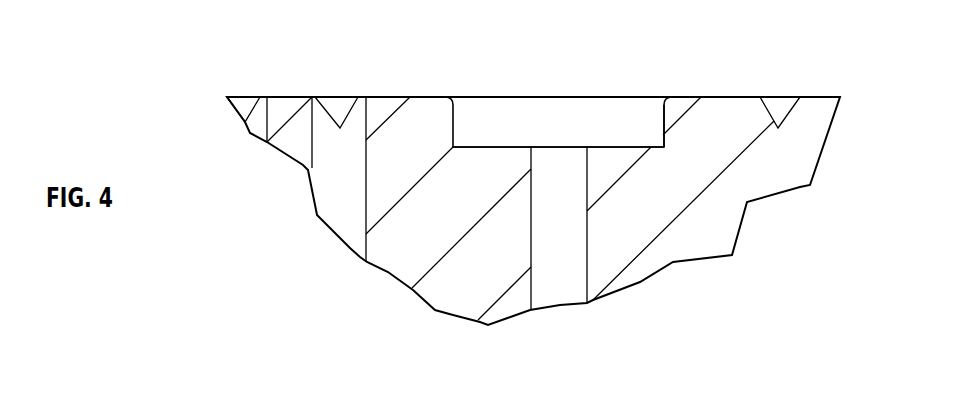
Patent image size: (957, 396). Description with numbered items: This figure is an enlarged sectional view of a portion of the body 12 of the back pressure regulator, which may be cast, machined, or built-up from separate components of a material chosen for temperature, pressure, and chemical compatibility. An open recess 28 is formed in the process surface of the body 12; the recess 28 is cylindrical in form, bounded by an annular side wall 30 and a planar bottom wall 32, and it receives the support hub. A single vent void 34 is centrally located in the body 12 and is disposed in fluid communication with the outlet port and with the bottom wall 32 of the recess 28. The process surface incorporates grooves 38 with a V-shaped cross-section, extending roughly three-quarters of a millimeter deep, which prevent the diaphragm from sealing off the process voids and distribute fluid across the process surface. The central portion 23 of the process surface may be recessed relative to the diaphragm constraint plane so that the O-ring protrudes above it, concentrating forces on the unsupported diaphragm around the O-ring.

The body 12 is at (772, 182).
The central portion 23 is at (738, 97).
The open recess 28 is at (510, 113).
The annular side wall 30 is at (664, 108).
The planar bottom wall 32 is at (625, 147).
The vent void 34 is at (531, 278).
The grooves 38 is at (324, 107).